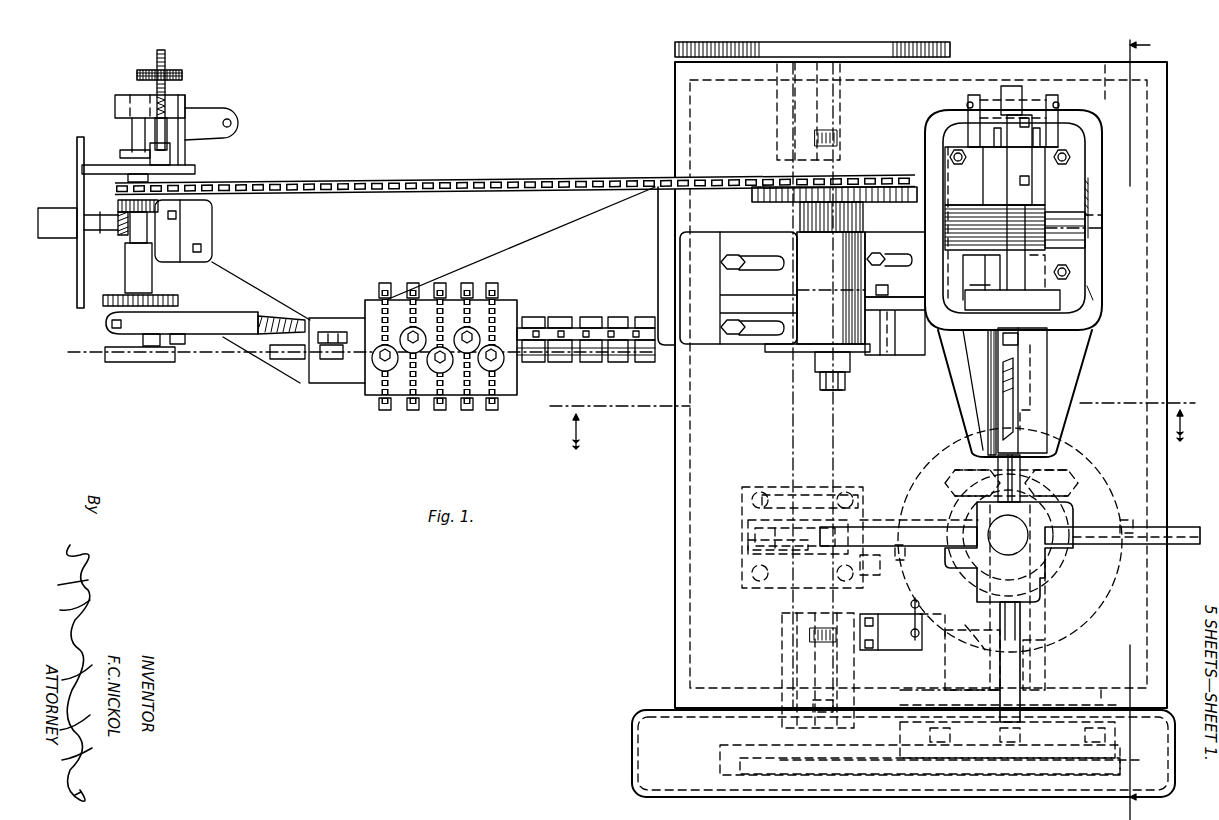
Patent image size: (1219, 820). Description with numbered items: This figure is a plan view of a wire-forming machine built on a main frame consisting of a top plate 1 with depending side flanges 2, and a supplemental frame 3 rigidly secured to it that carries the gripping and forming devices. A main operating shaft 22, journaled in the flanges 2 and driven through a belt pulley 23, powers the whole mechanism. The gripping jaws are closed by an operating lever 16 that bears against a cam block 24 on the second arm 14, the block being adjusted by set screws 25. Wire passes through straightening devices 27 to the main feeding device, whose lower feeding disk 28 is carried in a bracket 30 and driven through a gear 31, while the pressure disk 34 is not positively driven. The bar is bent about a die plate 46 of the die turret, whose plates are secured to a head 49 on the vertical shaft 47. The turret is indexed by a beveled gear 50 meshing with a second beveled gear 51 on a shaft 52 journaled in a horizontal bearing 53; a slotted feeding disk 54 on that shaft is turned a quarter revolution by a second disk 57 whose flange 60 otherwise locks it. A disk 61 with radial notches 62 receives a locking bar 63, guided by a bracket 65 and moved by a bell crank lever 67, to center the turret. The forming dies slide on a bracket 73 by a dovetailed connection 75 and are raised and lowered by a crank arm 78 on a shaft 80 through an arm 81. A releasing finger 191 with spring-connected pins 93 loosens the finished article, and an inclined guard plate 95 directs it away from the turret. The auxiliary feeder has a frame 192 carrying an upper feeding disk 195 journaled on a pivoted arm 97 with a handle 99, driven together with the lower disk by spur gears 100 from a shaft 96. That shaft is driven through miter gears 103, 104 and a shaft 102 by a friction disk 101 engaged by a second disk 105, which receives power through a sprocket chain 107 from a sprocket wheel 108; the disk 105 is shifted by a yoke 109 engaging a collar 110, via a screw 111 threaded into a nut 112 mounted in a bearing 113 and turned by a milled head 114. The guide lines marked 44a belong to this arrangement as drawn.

The top plate 1 is at (676, 630).
The depending flanges 2 is at (1178, 352).
The supplemental frame 3 is at (1105, 310).
The second arm 14 is at (1012, 195).
The operating lever 16 is at (1010, 92).
The main operating shaft 22 is at (786, 152).
The belt pulley 23 is at (675, 48).
The block 24 is at (1033, 160).
The set screws 25 is at (1023, 118).
The straightening devices 27 is at (428, 325).
The lower feeding disk 28 is at (770, 346).
The bracket 30 is at (731, 242).
The gear 31 is at (757, 192).
The pressure disk 34 is at (800, 348).
The guide 44a is at (1040, 192).
The die plate 46 is at (922, 538).
The vertical shaft 47 is at (1009, 588).
The head 49 is at (1033, 570).
The beveled gear 50 is at (952, 506).
The second beveled gear 51 is at (962, 470).
The shaft 52 is at (990, 606).
The horizontal bearing 53 is at (978, 637).
The feeding disk 54 is at (1073, 758).
The second disk 57 is at (725, 772).
The flange 60 is at (738, 753).
The disk 61 is at (893, 506).
The radial notches 62 is at (898, 548).
The locking bar 63 is at (900, 566).
The bracket 65 is at (745, 487).
The bell crank lever 67 is at (760, 541).
The bracket 73 is at (983, 412).
The dovetailed connection 75 is at (1003, 383).
The crank arm 78 is at (1035, 335).
The shaft 80 is at (1073, 236).
The arm 81 is at (958, 283).
The pins 93 is at (930, 597).
The inclined guard plate 95 is at (895, 642).
The shaft 96 is at (132, 128).
The arm 97 is at (238, 322).
The handle 99 is at (283, 318).
The spur gears 100 is at (115, 294).
The friction disk 101 is at (80, 292).
The shaft 102 is at (130, 252).
The miter gear 103 is at (120, 207).
The miter gear 104 is at (158, 208).
The second disk 105 is at (195, 170).
The sprocket chain 107 is at (498, 177).
The sprocket wheel 108 is at (882, 176).
The yoke 109 is at (168, 150).
The collar 110 is at (122, 152).
The screw 111 is at (167, 126).
The nut 112 is at (178, 93).
The bearing 113 is at (205, 98).
The milled head 114 is at (172, 71).
The finger 191 is at (912, 645).
The frame 192 is at (262, 289).
The upper feeding disk 195 is at (147, 355).